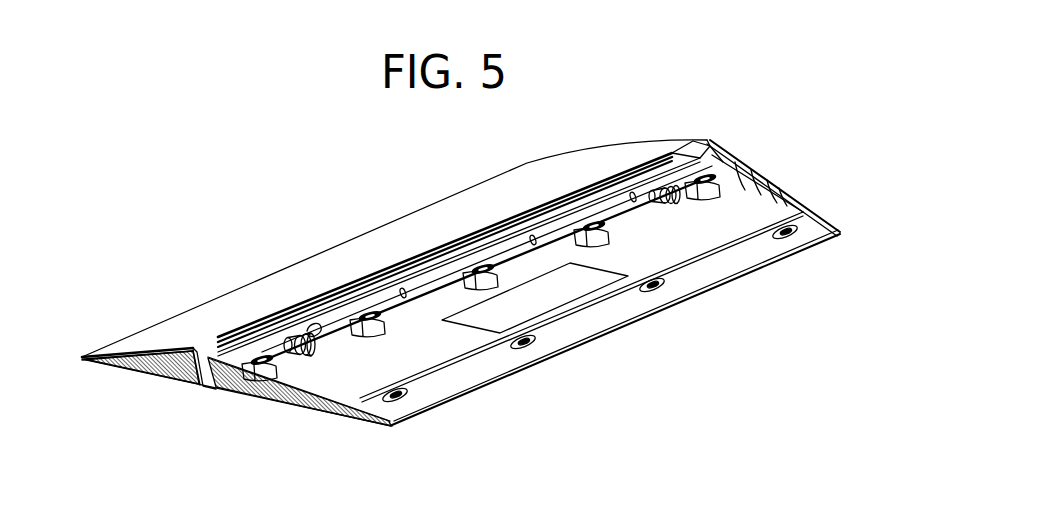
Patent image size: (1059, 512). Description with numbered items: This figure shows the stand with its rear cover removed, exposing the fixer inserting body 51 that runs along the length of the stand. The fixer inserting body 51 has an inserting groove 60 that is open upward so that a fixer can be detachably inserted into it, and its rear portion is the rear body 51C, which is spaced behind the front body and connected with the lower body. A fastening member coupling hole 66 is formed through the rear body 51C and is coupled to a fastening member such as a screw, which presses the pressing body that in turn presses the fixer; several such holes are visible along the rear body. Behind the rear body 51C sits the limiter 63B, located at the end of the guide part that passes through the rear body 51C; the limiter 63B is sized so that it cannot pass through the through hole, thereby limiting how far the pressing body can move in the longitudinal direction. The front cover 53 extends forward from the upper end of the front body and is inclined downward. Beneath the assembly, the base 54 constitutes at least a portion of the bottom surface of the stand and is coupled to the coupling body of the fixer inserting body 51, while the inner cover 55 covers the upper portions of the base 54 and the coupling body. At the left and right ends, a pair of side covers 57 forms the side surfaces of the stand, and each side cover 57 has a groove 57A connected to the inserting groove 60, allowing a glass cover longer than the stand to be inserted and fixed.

The fixer inserting body 51 is at (322, 297).
The rear body 51C is at (690, 172).
The front cover 53 is at (337, 262).
The base 54 is at (420, 418).
The inner cover 55 is at (732, 261).
The side cover 57 is at (236, 402).
The groove 57A is at (192, 388).
The inserting groove 60 is at (410, 250).
The limiter 63B is at (286, 342).
The fastening member coupling hole 66 is at (570, 262).